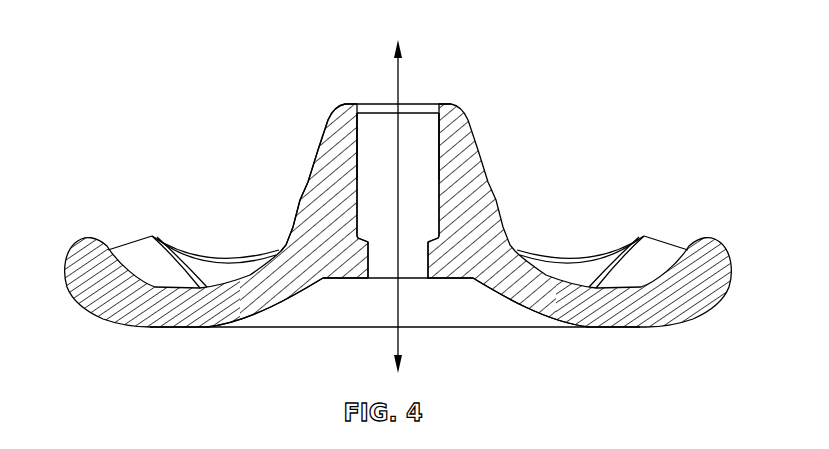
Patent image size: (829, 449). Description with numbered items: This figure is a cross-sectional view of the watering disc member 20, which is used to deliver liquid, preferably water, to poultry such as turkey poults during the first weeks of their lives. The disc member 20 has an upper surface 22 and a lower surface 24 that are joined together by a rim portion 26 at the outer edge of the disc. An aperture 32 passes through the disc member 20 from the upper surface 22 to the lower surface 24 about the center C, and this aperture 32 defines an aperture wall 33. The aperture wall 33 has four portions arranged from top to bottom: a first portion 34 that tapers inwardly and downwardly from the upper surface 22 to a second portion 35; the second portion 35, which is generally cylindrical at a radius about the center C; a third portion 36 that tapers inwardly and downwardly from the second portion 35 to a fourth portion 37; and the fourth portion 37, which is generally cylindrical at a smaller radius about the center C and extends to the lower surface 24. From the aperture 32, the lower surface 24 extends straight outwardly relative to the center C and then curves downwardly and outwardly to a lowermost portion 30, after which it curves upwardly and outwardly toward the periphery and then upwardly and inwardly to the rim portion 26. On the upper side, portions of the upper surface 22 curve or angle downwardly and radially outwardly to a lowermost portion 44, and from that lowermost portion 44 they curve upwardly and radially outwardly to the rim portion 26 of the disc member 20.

The disc member 20 is at (220, 66).
The upper surface 22 is at (296, 190).
The lower surface 24 is at (311, 299).
The rim portion 26 is at (558, 244).
The lowermost portion 30 is at (655, 326).
The aperture 32 is at (417, 127).
The aperture wall 33 is at (358, 122).
The first portion 34 is at (381, 104).
The second portion 35 is at (440, 127).
The third portion 36 is at (365, 240).
The fourth portion 37 is at (368, 272).
The lowermost portion of the third portions 44 is at (152, 287).
The center C is at (403, 62).